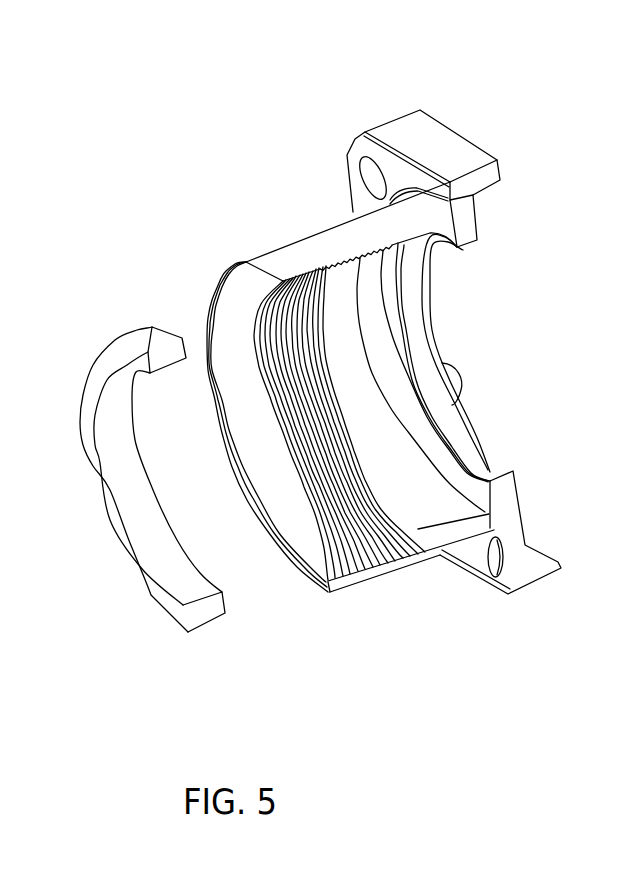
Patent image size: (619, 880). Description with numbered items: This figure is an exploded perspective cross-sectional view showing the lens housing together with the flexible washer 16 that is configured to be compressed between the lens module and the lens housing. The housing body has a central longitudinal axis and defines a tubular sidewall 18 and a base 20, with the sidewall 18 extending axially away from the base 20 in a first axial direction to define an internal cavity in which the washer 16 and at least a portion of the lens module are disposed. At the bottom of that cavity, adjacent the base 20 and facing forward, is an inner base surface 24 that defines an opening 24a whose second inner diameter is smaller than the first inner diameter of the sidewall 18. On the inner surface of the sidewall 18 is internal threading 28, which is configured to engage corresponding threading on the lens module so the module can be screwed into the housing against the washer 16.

The flexible washer 16 is at (142, 592).
The tubular sidewall 18 is at (352, 570).
The base 20 is at (447, 154).
The inner base surface 24 is at (475, 473).
The opening 24a is at (500, 335).
The internal threading 28 is at (391, 540).